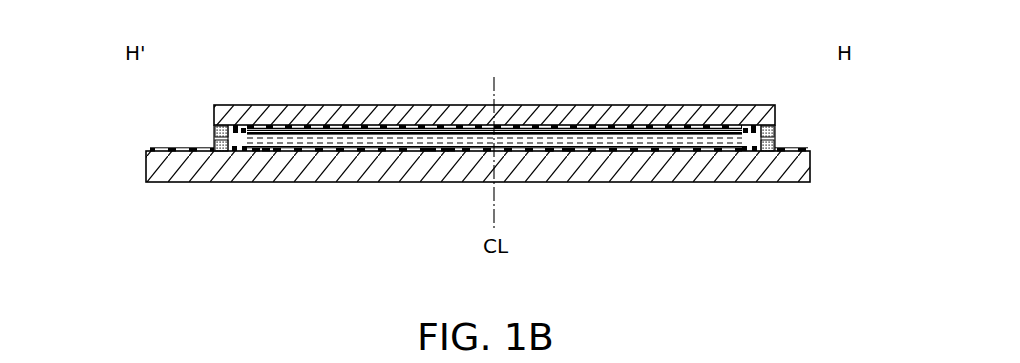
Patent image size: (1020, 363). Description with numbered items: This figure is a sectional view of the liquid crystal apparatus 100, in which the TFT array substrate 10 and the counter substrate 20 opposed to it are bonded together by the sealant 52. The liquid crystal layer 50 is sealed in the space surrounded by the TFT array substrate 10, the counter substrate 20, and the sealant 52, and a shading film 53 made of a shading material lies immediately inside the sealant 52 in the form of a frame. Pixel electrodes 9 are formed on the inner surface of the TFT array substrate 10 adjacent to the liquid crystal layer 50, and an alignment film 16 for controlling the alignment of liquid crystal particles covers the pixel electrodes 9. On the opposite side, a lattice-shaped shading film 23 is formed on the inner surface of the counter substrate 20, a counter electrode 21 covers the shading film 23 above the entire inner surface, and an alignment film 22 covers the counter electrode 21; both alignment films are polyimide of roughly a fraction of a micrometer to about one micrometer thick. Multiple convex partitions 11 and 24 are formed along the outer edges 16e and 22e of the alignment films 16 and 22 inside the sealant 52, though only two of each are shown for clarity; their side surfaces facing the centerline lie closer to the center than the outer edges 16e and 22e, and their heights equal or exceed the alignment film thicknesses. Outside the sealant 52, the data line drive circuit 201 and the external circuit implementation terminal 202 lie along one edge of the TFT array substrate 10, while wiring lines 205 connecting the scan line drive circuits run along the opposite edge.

The liquid crystal apparatus 100 is at (684, 63).
The counter substrate 20 is at (603, 105).
The TFT array substrate 10 is at (675, 173).
The convex partition 24 is at (247, 128).
The counter electrode 21 is at (383, 130).
The shading film 23 is at (320, 125).
The alignment film 22 is at (418, 136).
The outer edge of alignment film 22e is at (215, 130).
The liquid crystal layer 50 is at (612, 150).
The shading film 53 is at (253, 130).
The alignment film 16 is at (313, 152).
The outer edge of alignment film 16e is at (215, 143).
The pixel electrode 9 is at (265, 152).
The convex partition 11 is at (245, 152).
The sealant 52 is at (222, 152).
The data line drive circuit 201 is at (199, 153).
The external circuit implementation terminal 202 is at (162, 155).
The wiring line 205 is at (795, 153).